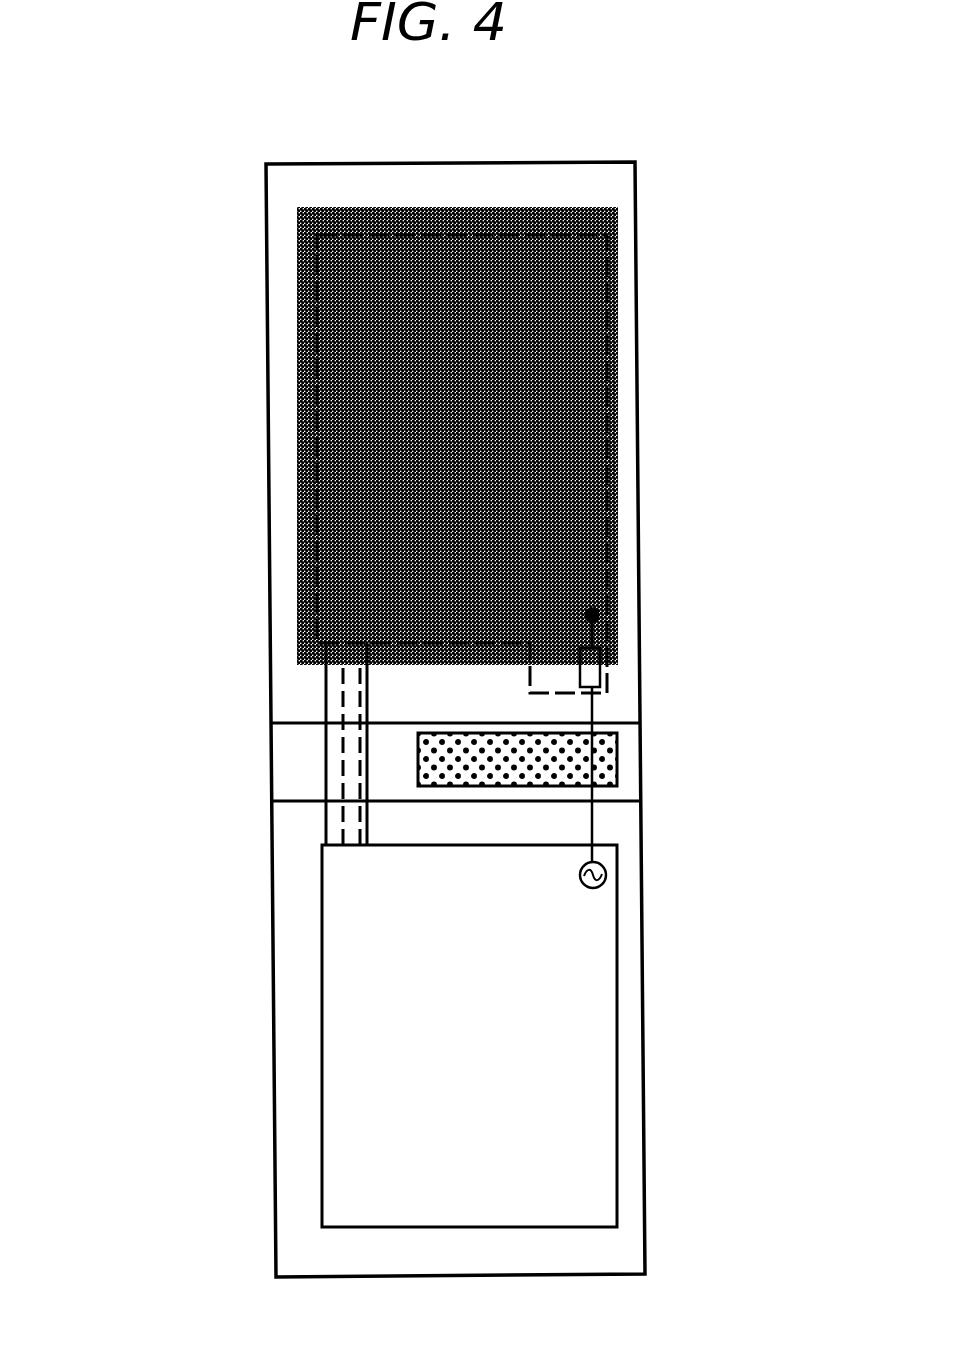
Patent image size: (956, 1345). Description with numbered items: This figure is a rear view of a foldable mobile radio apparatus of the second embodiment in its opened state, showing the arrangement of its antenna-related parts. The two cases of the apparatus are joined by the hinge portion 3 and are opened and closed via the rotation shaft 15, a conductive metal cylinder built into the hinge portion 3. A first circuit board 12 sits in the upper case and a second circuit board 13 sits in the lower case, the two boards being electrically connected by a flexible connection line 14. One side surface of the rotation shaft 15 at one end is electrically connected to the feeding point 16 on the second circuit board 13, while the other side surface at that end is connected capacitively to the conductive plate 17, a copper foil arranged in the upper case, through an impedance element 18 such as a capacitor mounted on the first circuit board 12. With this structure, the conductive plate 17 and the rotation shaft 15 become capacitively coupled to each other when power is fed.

The hinge portion 3 is at (288, 783).
The first circuit board 12 is at (322, 410).
The second circuit board 13 is at (365, 1040).
The flexible connection line 14 is at (350, 732).
The rotation shaft 15 is at (607, 760).
The feeding point 16 is at (600, 866).
The conductive plate 17 is at (543, 487).
The impedance element 18 is at (610, 657).